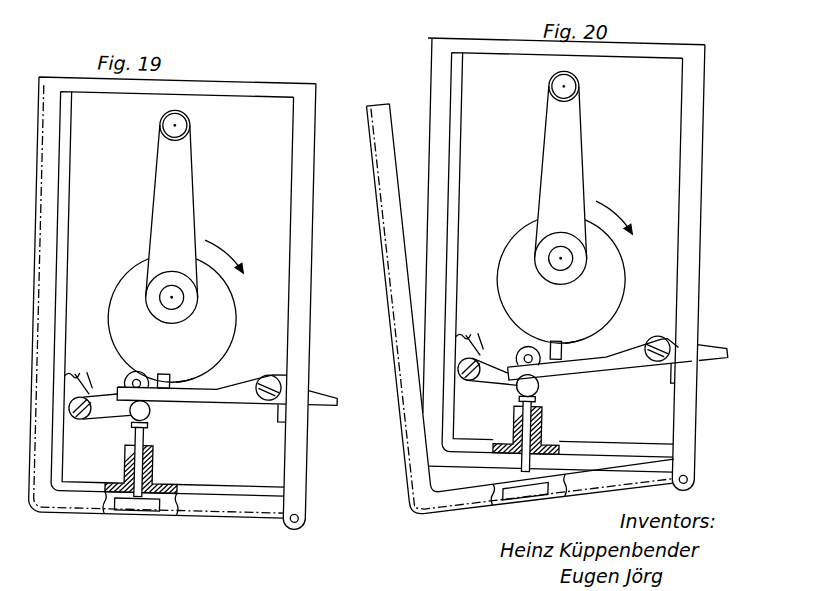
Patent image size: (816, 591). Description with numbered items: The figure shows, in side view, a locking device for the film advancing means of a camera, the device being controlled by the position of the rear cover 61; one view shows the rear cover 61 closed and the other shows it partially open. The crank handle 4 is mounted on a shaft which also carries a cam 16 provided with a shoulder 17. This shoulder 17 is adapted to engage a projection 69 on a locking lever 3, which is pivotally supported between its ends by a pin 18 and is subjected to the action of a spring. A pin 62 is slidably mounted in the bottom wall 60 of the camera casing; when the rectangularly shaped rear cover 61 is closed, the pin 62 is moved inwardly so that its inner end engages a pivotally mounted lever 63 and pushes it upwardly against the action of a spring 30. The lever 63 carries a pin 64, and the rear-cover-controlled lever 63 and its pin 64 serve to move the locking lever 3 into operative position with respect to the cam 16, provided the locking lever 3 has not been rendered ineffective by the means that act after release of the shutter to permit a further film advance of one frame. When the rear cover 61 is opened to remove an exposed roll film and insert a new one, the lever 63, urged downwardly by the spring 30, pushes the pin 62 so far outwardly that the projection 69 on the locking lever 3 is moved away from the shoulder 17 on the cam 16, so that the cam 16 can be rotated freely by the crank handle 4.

In FIG. 19, the locking lever 3 is at (226, 405).
In FIG. 20, the locking lever 3 is at (616, 365).
In FIG. 19, the crank handle 4 is at (149, 120).
In FIG. 20, the crank handle 4 is at (574, 165).
In FIG. 19, the cam 16 is at (186, 236).
In FIG. 20, the cam 16 is at (579, 272).
In FIG. 19, the shoulder 17 is at (195, 356).
In FIG. 20, the shoulder 17 is at (576, 322).
In FIG. 19, the pin 18 is at (256, 411).
In FIG. 20, the pin 18 is at (652, 368).
In FIG. 19, the spring 30 is at (80, 368).
In FIG. 20, the spring 30 is at (473, 330).
In FIG. 19, the bottom wall 60 is at (265, 359).
In FIG. 20, the bottom wall 60 is at (577, 264).
In FIG. 19, the rear cover 61 is at (44, 424).
In FIG. 20, the rear cover 61 is at (519, 319).
In FIG. 19, the pin 62 is at (155, 448).
In FIG. 20, the pin 62 is at (543, 423).
In FIG. 19, the lever 63 is at (99, 417).
In FIG. 20, the lever 63 is at (487, 383).
In FIG. 19, the pin 64 is at (122, 369).
In FIG. 20, the pin 64 is at (514, 346).
In FIG. 19, the projection 69 is at (156, 362).
In FIG. 20, the projection 69 is at (540, 326).